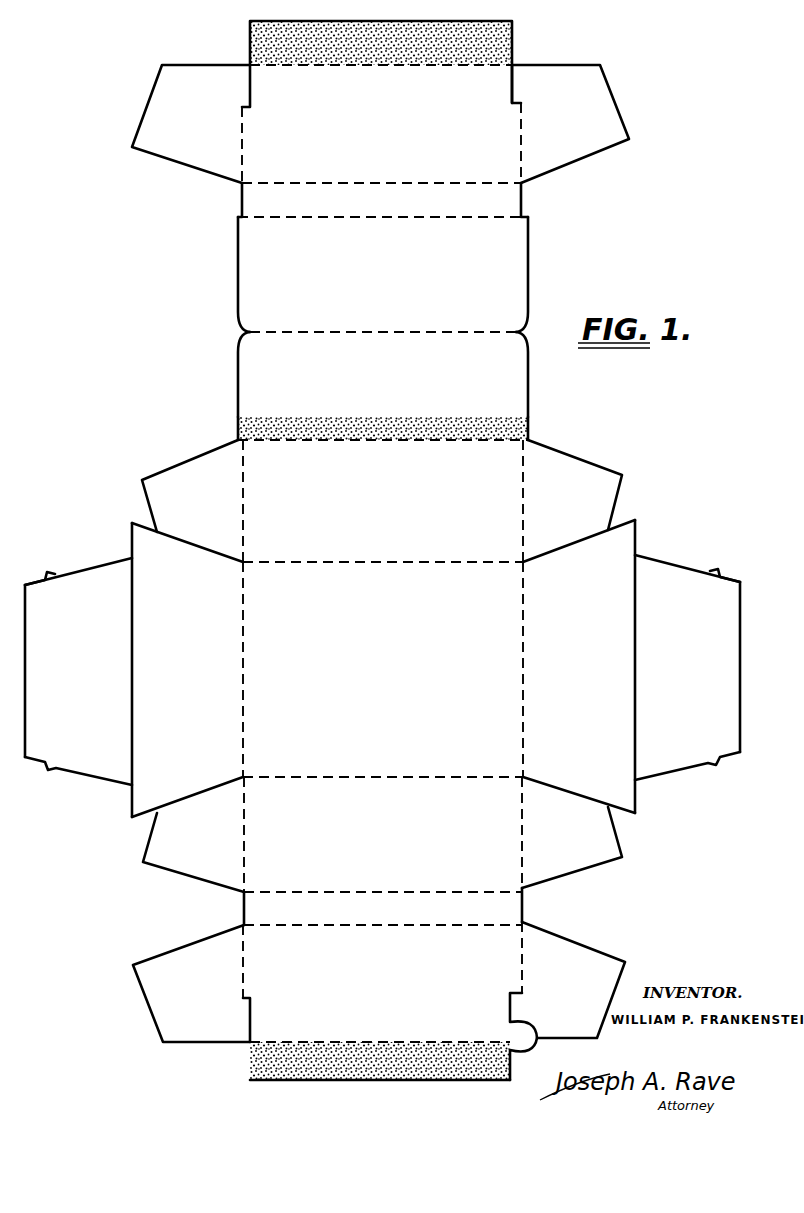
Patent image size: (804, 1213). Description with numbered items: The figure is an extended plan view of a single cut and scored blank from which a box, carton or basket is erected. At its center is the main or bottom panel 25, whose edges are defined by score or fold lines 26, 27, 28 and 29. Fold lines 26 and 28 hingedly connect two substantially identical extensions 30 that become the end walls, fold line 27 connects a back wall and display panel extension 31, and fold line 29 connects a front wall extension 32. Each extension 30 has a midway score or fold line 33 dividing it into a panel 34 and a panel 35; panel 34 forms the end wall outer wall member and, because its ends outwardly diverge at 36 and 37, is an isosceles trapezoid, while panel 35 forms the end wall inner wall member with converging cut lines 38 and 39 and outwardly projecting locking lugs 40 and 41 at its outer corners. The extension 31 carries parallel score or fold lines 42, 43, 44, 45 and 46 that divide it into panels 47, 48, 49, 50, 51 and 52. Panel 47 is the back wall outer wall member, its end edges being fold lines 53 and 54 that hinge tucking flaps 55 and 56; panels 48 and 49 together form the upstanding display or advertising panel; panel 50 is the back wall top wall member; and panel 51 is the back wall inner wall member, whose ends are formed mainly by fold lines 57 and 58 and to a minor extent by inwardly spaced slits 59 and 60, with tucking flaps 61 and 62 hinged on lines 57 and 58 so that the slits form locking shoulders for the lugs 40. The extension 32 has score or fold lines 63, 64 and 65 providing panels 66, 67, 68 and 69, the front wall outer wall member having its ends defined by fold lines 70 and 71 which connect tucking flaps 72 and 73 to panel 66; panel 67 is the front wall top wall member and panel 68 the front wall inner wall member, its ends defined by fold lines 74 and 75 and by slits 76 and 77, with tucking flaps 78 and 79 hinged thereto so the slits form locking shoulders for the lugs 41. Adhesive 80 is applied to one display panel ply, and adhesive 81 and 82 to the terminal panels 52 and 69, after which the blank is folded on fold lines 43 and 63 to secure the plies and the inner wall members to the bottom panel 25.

The main or bottom panel 25 is at (424, 633).
The score or fold line 26 is at (245, 640).
The score or fold line 27 is at (362, 566).
The score or fold line 28 is at (522, 636).
The score or fold line 29 is at (426, 778).
The extension 30 is at (58, 483).
The back wall and display panel extension 31 is at (670, 207).
The front wall extension 32 is at (686, 853).
The score or fold line 33 is at (134, 633).
The panel 34 is at (530, 710).
The panel 35 is at (118, 688).
The outwardly diverging end 36 is at (186, 554).
The outwardly diverging end 37 is at (586, 775).
The cut line 38 is at (78, 578).
The cut line 39 is at (86, 764).
The locking lug 40 is at (52, 574).
The locking lug 41 is at (53, 766).
The score or fold line 42 is at (308, 450).
The score or fold line 43 is at (326, 341).
The score or fold line 44 is at (337, 232).
The score or fold line 45 is at (337, 192).
The score or fold line 46 is at (336, 72).
The panel 47 is at (304, 556).
The panel 48 is at (246, 389).
The panel 49 is at (453, 324).
The panel 50 is at (398, 212).
The panel 51 is at (447, 176).
The terminal panel 52 is at (511, 40).
The score or fold line 53 is at (245, 517).
The score or fold line 54 is at (522, 512).
The tucking flap 55 is at (191, 464).
The tucking flap 56 is at (582, 466).
The score or fold line 57 is at (244, 136).
The score or fold line 58 is at (521, 150).
The slit or cut 59 is at (250, 98).
The slit or cut 60 is at (512, 98).
The tucking flap 61 is at (178, 153).
The tucking flap 62 is at (604, 108).
The score or fold line 63 is at (312, 866).
The score or fold line 64 is at (308, 924).
The score or fold line 65 is at (336, 1044).
The panel 66 is at (364, 780).
The panel 67 is at (448, 894).
The panel 68 is at (420, 928).
The panel 69 is at (244, 1086).
The score or fold line 70 is at (245, 836).
The score or fold line 71 is at (521, 830).
The tucking flap 72 is at (180, 860).
The tucking flap 73 is at (584, 868).
The score or fold line 74 is at (244, 972).
The score or fold line 75 is at (520, 962).
The cut line or slit 76 is at (250, 1018).
The cut line or slit 77 is at (510, 1012).
The tucking flap 78 is at (168, 962).
The tucking flap 79 is at (596, 958).
The adhesive 80 is at (292, 425).
The adhesive 81 is at (250, 41).
The adhesive 82 is at (306, 1076).